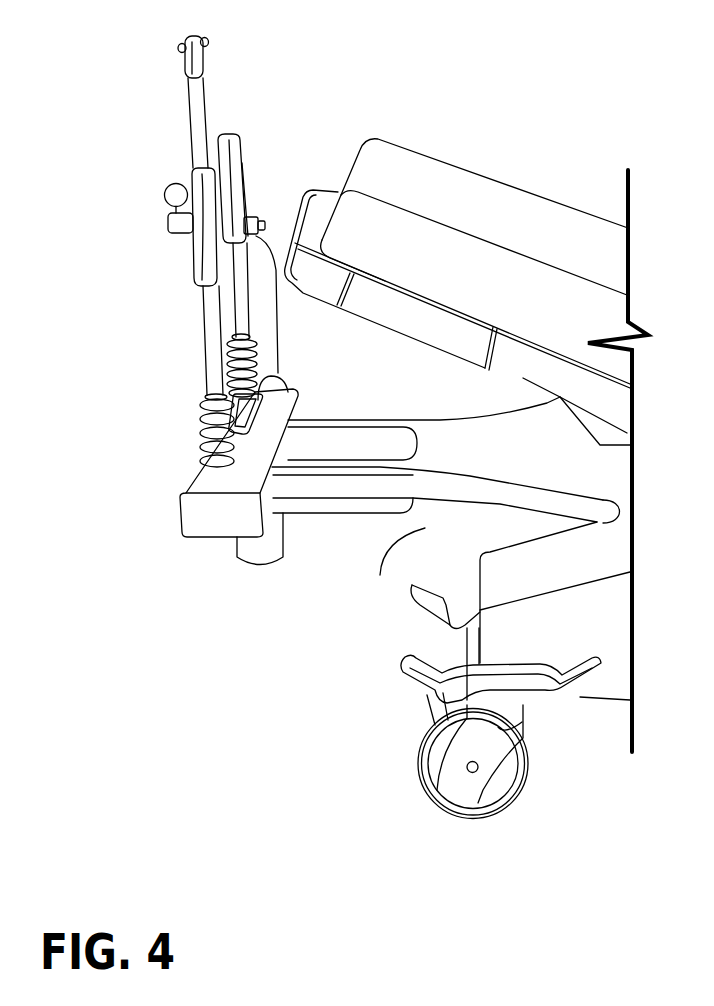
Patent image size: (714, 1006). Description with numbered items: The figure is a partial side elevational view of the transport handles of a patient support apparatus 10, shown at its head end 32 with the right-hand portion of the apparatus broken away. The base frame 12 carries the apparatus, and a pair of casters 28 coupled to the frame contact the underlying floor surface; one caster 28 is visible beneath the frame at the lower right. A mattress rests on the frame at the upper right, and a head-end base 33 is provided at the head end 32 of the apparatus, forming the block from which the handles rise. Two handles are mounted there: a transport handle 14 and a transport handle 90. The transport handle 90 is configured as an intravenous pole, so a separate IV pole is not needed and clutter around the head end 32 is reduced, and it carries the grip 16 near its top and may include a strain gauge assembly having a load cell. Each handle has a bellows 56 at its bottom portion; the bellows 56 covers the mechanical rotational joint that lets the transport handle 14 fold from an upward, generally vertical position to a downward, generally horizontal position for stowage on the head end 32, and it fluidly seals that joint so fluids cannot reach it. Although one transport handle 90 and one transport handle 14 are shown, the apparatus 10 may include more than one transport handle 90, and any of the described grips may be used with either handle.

The patient support apparatus 10 is at (592, 134).
The base frame 12 is at (420, 513).
The transport handle 14 is at (258, 172).
The grip 16 is at (230, 135).
The casters 28 is at (430, 712).
The head end 32 is at (442, 142).
The head-end base 33 is at (215, 517).
The bellows 56 is at (247, 384).
The transport handle 90 is at (187, 292).